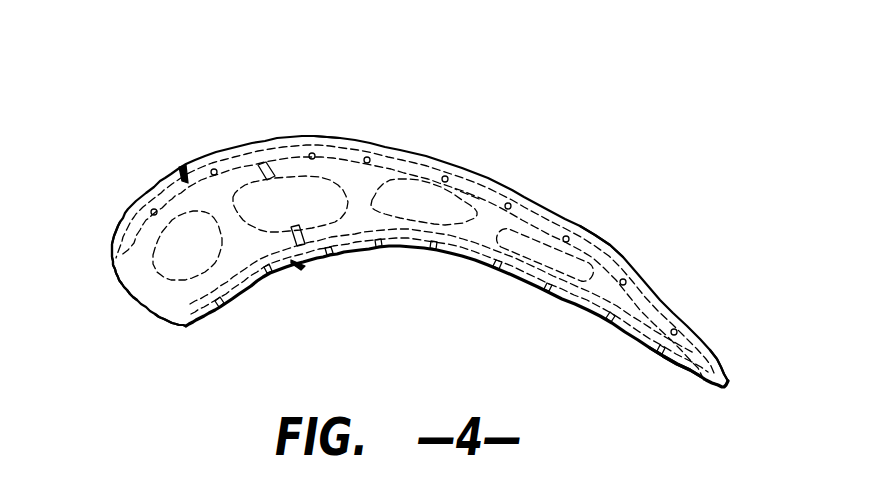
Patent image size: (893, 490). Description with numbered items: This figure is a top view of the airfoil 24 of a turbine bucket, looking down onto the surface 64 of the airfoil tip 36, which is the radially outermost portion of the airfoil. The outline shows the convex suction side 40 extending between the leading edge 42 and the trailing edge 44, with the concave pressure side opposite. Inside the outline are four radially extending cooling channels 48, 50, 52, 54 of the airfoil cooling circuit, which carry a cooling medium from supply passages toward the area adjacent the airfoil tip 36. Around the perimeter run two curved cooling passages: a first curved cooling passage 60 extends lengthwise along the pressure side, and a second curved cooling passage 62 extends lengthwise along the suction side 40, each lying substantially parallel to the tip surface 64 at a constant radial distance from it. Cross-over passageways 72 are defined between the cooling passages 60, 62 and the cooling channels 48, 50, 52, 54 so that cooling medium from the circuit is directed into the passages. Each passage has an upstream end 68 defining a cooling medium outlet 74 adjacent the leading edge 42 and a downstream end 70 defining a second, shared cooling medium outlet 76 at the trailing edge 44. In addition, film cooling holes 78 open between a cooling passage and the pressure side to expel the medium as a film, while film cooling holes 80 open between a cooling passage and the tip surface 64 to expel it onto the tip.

The airfoil 24 is at (163, 78).
The airfoil tip 36 is at (614, 242).
The suction side 40 is at (338, 138).
The leading edge 42 is at (130, 302).
The trailing edge 44 is at (730, 378).
The cooling channel 48 is at (174, 263).
The cooling channel 50 is at (276, 220).
The cooling channel 52 is at (388, 215).
The cooling channel 54 is at (540, 236).
The first curved cooling passage 60 is at (301, 268).
The second curved cooling passage 62 is at (183, 168).
The tip surface 64 is at (488, 216).
The upstream end 68 is at (127, 228).
The downstream end 70 is at (681, 374).
The cross-over passageway 72 is at (276, 160).
The cooling medium outlet 74 is at (112, 252).
The shared cooling medium outlet 76 is at (723, 386).
The film cooling holes 78 is at (258, 289).
The film cooling holes 80 is at (154, 208).